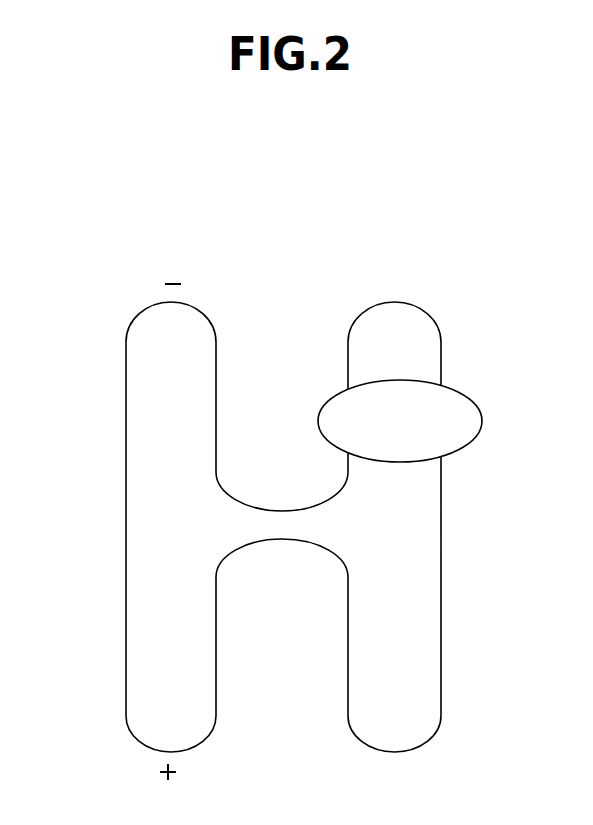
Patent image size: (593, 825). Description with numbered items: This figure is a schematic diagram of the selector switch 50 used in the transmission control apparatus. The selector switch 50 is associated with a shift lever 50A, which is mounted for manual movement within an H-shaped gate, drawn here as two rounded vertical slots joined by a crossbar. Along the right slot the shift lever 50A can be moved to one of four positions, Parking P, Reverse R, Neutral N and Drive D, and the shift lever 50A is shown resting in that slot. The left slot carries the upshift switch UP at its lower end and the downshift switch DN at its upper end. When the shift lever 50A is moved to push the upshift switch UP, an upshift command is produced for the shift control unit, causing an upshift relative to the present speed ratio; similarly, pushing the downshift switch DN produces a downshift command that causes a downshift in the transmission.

The selector switch 50 is at (421, 297).
The shift lever 50A is at (331, 391).
The Parking position P is at (497, 304).
The Reverse position R is at (497, 364).
The Neutral position N is at (498, 453).
The Drive position D is at (498, 528).
The downshift switch DN is at (173, 310).
The upshift switch UP is at (166, 744).